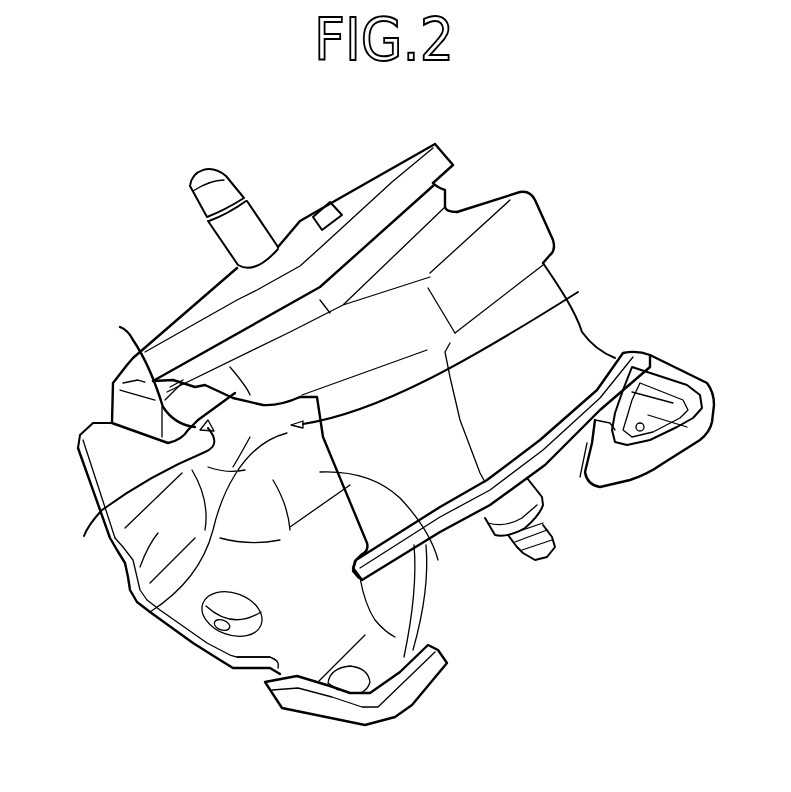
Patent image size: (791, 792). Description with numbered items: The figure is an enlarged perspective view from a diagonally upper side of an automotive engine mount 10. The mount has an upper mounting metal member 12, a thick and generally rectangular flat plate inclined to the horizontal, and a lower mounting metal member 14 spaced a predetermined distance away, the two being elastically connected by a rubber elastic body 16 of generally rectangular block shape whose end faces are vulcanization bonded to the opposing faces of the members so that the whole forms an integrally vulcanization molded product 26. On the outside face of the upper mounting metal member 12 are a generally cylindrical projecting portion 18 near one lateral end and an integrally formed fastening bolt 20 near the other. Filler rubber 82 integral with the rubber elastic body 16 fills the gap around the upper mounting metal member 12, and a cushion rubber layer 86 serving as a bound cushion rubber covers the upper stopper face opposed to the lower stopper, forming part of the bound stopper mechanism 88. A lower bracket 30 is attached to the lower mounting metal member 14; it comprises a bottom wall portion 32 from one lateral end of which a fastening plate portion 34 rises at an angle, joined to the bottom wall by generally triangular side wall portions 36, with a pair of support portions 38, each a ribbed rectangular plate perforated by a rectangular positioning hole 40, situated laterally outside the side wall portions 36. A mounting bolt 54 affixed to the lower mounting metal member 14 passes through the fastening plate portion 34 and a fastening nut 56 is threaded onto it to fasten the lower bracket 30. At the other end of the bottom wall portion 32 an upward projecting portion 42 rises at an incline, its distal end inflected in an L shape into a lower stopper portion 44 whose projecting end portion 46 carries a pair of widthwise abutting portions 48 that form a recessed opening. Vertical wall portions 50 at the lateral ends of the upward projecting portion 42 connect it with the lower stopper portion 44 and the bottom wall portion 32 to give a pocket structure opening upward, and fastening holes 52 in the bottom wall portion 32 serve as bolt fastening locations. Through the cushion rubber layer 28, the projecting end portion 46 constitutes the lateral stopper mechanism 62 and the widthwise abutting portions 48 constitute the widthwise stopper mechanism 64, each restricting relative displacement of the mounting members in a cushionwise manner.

The engine mount 10 is at (149, 164).
The upper mounting metal member 12 is at (368, 190).
The lower mounting metal member 14 is at (653, 350).
The rubber elastic body 16 is at (560, 343).
The projecting portion 18 is at (322, 210).
The fastening bolt 20 is at (245, 225).
The integrally vulcanization molded product 26 is at (537, 190).
The cushion rubber layer 28 is at (122, 410).
The lower bracket 30 is at (186, 647).
The bottom wall portion 32 is at (300, 617).
The fastening plate portion 34 is at (470, 525).
The side wall portions 36 is at (407, 620).
The support portions 38 is at (322, 705).
The positioning hole 40 is at (388, 712).
The upward projecting portion 42 is at (423, 547).
The lower stopper portion 44 is at (177, 600).
The projecting end portion 46 is at (120, 327).
The widthwise abutting portions 48 is at (78, 419).
The vertical wall portion 50 is at (140, 567).
The fastening hole 52 is at (227, 637).
The mounting bolt 54 is at (533, 560).
The fastening nut 56 is at (530, 503).
The lateral stopper mechanism 62 is at (84, 536).
The widthwise stopper mechanism 64 is at (112, 439).
The filler rubber 82 is at (448, 233).
The cushion rubber layer 86 is at (230, 367).
The bound stopper mechanism 88 is at (578, 292).